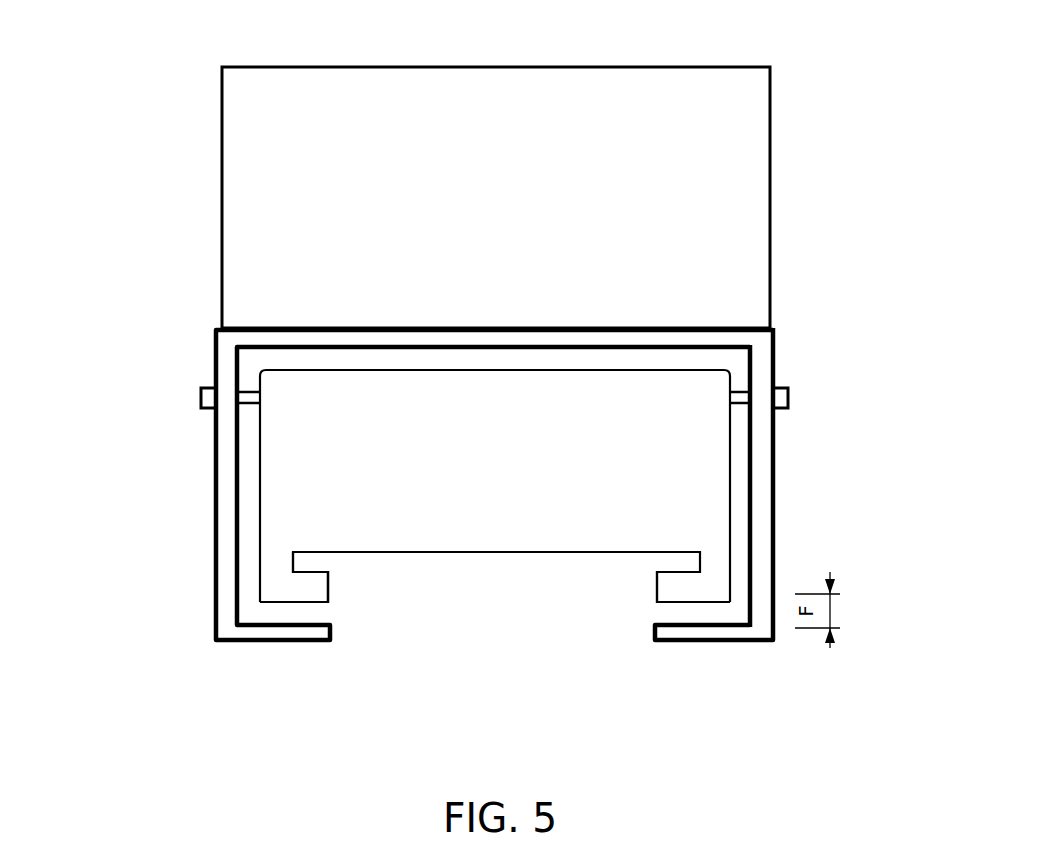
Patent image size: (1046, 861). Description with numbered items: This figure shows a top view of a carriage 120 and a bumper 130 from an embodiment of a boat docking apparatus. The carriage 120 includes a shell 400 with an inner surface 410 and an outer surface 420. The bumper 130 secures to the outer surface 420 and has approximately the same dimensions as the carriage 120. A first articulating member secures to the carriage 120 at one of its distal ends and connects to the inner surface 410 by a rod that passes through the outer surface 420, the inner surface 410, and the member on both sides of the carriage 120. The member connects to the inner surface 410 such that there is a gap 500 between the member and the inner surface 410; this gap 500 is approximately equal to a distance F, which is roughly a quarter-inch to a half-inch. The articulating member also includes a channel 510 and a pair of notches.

The bumper 130 is at (725, 92).
The carriage 120 is at (163, 349).
The shell 400 is at (228, 487).
The outer surface 420 is at (777, 467).
The inner surface 410 is at (753, 578).
The gap 500 is at (290, 602).
The channel 510 is at (338, 578).